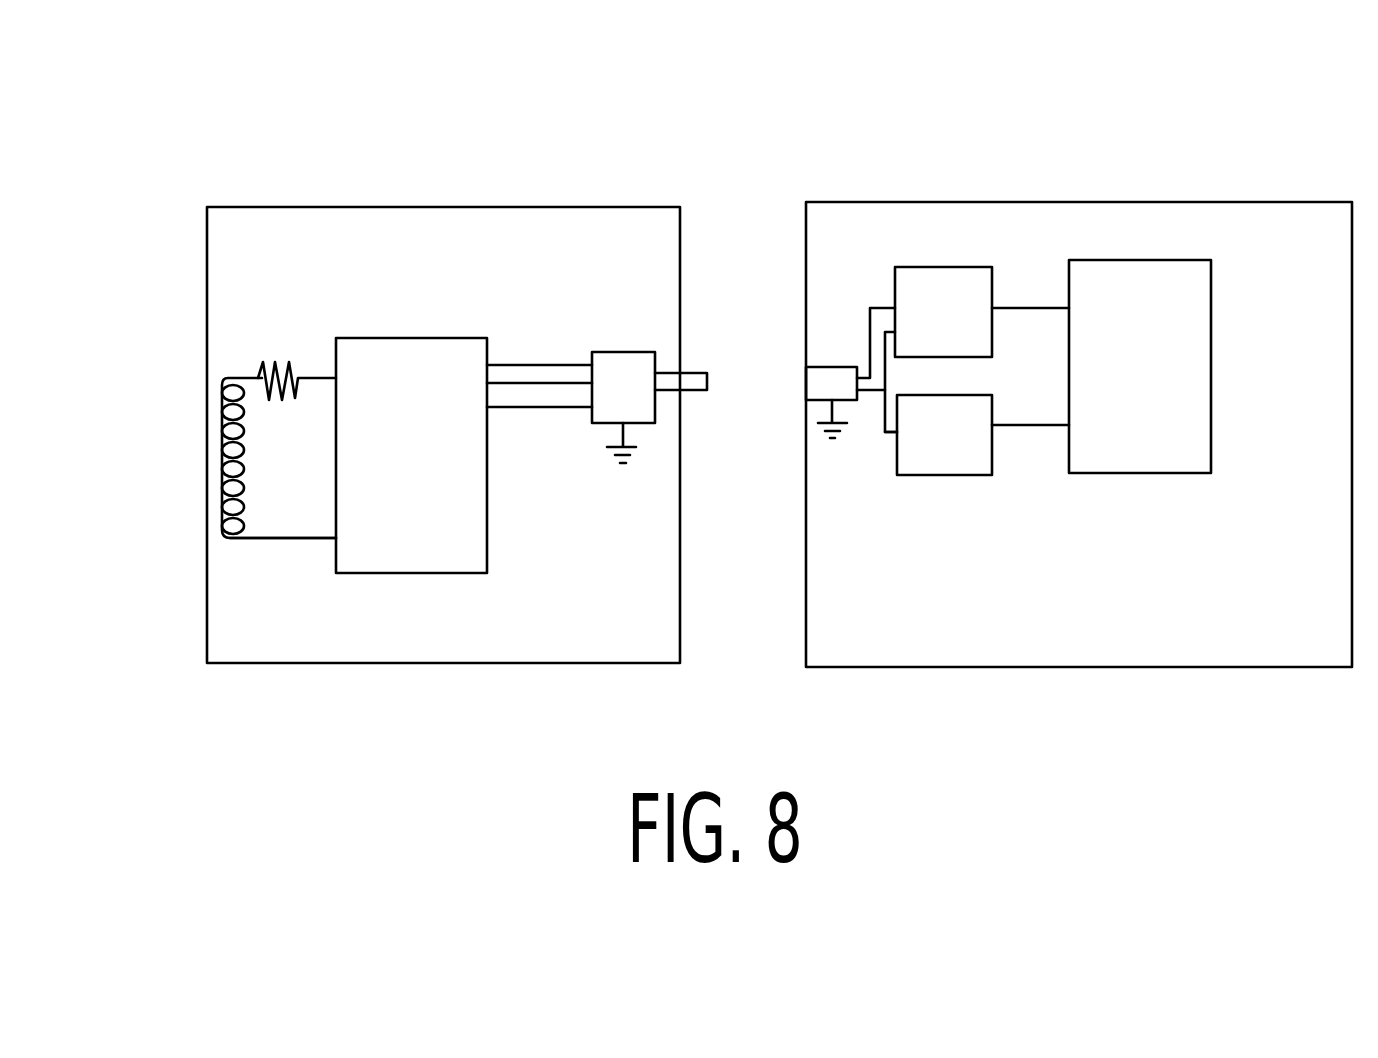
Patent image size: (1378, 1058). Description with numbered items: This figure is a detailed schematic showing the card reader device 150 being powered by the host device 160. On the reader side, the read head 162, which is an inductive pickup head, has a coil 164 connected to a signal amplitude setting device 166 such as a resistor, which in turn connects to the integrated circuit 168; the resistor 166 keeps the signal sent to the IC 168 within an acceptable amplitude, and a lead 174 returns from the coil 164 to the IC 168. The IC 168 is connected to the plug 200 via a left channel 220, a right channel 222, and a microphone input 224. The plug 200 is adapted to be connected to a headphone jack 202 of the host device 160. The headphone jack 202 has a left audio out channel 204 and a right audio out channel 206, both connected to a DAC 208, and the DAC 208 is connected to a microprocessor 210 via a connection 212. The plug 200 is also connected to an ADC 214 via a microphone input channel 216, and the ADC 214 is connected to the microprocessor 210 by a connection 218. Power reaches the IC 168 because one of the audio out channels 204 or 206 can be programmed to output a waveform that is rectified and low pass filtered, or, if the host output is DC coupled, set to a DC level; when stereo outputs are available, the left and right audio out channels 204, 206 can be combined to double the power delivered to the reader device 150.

The card reader device 150 is at (428, 167).
The host device 160 is at (1045, 158).
The read head 162 is at (230, 363).
The coil 164 is at (250, 458).
The signal amplitude setting device 166 is at (280, 365).
The integrated circuit 168 is at (403, 338).
The return conductor 174 is at (268, 542).
The plug 200 is at (620, 352).
The left channel 220 is at (525, 365).
The right channel 222 is at (563, 383).
The microphone input 224 is at (510, 410).
The headphone jack 202 is at (830, 368).
The left audio out channel 204 is at (867, 323).
The right audio out channel 206 is at (893, 372).
The DAC 208 is at (933, 267).
The microprocessor 210 is at (1217, 340).
The connection 212 is at (1029, 308).
The ADC 214 is at (930, 477).
The microphone input channel 216 is at (882, 422).
The connection 218 is at (1018, 428).